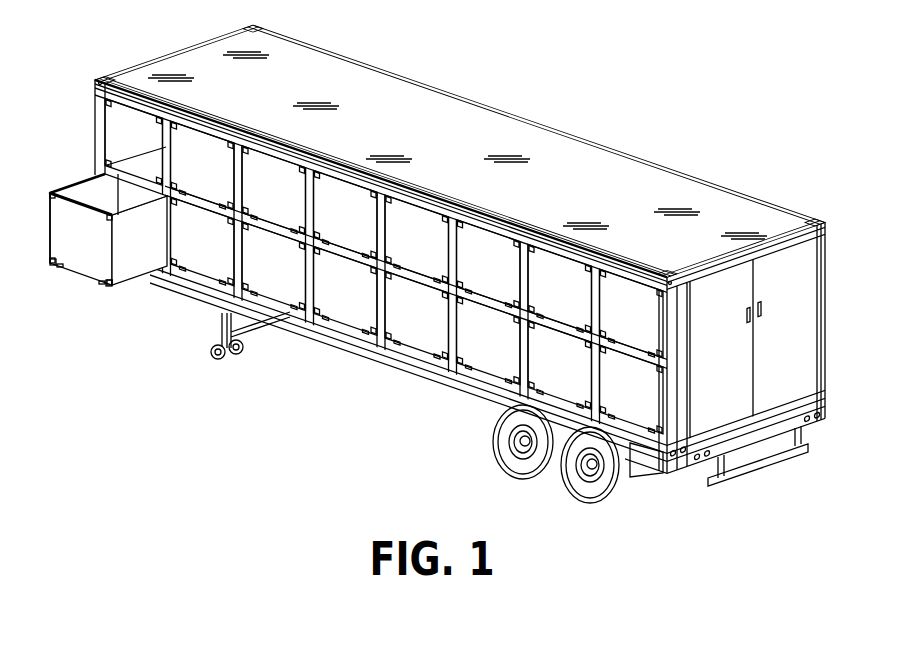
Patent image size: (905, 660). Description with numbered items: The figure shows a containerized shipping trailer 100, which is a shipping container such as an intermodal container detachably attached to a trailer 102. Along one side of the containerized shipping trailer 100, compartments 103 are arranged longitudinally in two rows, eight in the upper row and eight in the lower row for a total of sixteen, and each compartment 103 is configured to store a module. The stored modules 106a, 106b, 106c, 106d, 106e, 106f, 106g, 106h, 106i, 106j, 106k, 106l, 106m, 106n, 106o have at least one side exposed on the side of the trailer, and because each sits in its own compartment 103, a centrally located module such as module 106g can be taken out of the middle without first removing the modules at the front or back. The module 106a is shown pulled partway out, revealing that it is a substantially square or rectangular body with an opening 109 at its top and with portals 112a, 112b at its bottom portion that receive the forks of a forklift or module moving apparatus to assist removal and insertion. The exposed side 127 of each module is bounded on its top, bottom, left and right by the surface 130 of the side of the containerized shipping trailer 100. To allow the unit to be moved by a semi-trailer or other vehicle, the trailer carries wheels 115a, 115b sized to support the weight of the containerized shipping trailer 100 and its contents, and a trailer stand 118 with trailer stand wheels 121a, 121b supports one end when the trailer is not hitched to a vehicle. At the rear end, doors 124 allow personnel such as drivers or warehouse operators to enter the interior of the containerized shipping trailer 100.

The containerized shipping trailer 100 is at (331, 52).
The surface of the side of the containerized shipping trailer 130 is at (176, 108).
The compartment 103 is at (148, 163).
The module 106a is at (64, 246).
The module 106b is at (187, 176).
The module 106c is at (187, 250).
The module 106d is at (259, 199).
The module 106e is at (260, 275).
The module 106f is at (330, 225).
The module 106g is at (330, 301).
The module 106h is at (399, 246).
The module 106i is at (399, 323).
The module 106j is at (471, 273).
The module 106k is at (469, 347).
The module 106l is at (541, 296).
The module 106m is at (537, 372).
The module 106n is at (609, 319).
The module 106o is at (609, 395).
The opening 109 is at (84, 178).
The exposed side 127 is at (56, 212).
The portal 112a is at (55, 267).
The portal 112b is at (105, 287).
The trailer stand 118 is at (218, 320).
The trailer stand wheel 121a is at (219, 360).
The trailer stand wheel 121b is at (243, 348).
The wheel 115a is at (493, 438).
The wheel 115b is at (636, 484).
The door 124 is at (757, 383).
The trailer 102 is at (772, 436).